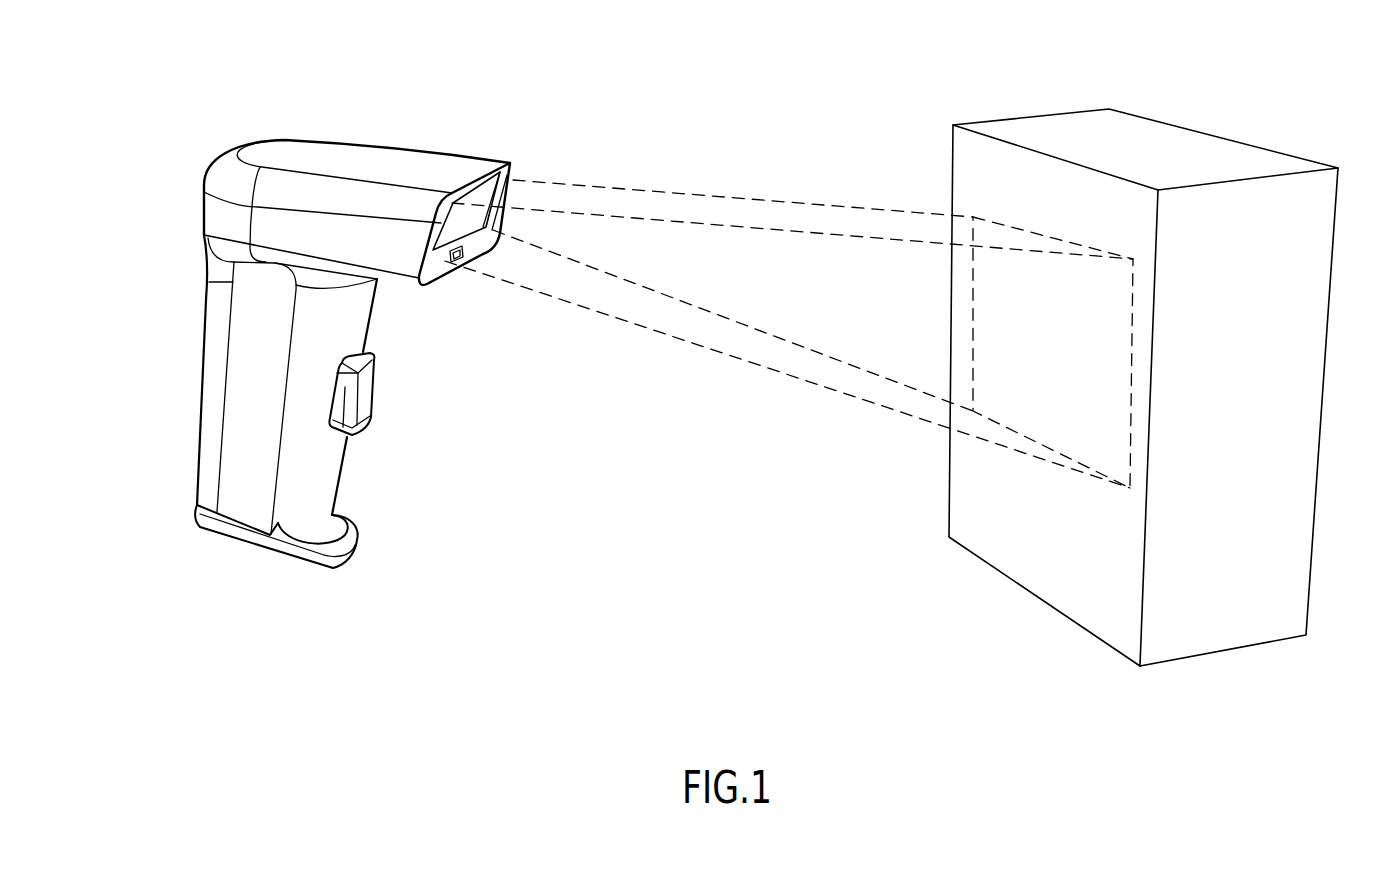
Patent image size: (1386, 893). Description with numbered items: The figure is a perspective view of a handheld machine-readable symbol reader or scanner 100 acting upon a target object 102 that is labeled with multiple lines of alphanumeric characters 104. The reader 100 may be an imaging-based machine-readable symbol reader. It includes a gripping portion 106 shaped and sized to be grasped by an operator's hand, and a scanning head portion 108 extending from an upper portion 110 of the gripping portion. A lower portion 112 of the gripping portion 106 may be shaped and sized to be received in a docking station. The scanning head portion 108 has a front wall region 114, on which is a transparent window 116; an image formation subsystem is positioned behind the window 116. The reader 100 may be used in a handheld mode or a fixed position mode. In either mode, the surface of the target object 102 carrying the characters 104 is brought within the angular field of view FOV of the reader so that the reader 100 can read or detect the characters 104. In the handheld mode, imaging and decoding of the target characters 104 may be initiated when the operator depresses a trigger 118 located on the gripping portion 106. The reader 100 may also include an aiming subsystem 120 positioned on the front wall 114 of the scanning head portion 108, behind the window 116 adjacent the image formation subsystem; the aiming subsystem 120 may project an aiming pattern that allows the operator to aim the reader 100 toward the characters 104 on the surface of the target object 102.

The handheld machine-readable symbol reader 100 is at (551, 70).
The target object 102 is at (1012, 128).
The characters 104 is at (1090, 375).
The gripping portion 106 is at (147, 427).
The scanning head portion 108 is at (453, 111).
The upper portion 110 is at (220, 305).
The lower portion 112 is at (247, 545).
The front wall region 114 is at (427, 284).
The transparent window 116 is at (508, 193).
The trigger 118 is at (365, 402).
The aiming subsystem 120 is at (472, 258).
The field of view FOV is at (713, 195).